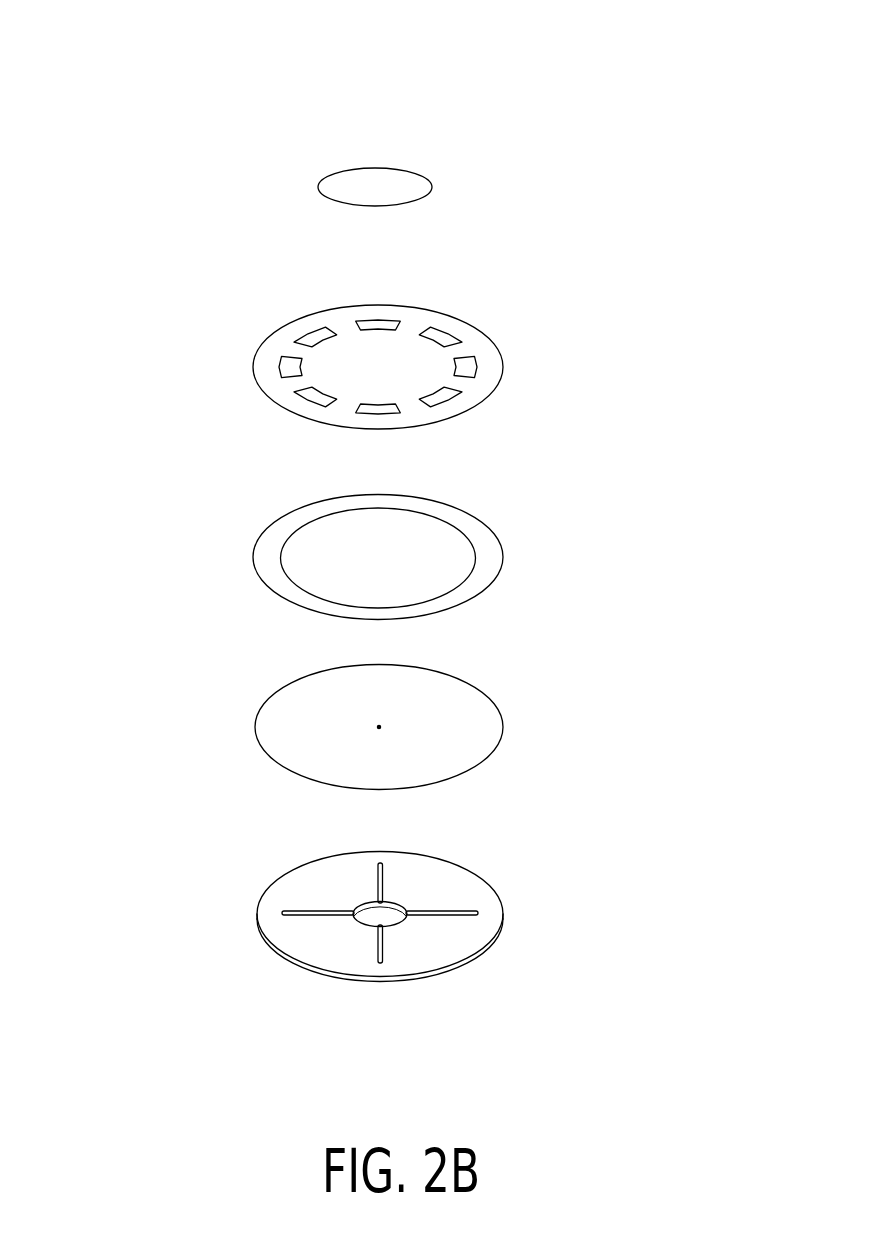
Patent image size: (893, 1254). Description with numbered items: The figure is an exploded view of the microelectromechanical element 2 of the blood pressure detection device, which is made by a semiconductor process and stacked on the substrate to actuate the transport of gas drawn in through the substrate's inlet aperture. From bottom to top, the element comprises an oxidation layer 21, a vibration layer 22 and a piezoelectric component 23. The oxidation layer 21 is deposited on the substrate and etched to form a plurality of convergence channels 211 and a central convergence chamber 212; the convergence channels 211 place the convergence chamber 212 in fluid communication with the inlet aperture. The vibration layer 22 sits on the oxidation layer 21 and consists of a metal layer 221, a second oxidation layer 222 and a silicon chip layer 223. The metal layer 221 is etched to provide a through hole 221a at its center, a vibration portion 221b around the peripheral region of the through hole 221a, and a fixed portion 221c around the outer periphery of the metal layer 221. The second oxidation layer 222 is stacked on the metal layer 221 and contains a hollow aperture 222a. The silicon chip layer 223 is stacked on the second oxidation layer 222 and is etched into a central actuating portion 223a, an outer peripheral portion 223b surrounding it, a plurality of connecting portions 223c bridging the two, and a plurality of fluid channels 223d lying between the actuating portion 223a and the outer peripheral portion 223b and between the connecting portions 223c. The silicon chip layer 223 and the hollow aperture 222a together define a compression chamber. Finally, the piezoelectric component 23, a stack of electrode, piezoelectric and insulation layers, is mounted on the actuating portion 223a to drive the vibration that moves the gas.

The microelectromechanical element 2 is at (747, 45).
The oxidation layer 21 is at (433, 869).
The convergence channels 211 is at (448, 915).
The convergence chamber 212 is at (378, 917).
The vibration layer 22 is at (700, 263).
The metal layer 221 is at (371, 700).
The through hole 221a is at (374, 727).
The vibration portion 221b is at (280, 722).
The fixed portion 221c is at (362, 693).
The second oxidation layer 222 is at (391, 528).
The hollow aperture 222a is at (337, 573).
The silicon chip layer 223 is at (397, 374).
The actuating portion 223a is at (358, 382).
The outer peripheral portion 223b is at (355, 422).
The connecting portions 223c is at (343, 325).
The fluid channels 223d is at (313, 340).
The piezoelectric component 23 is at (475, 158).